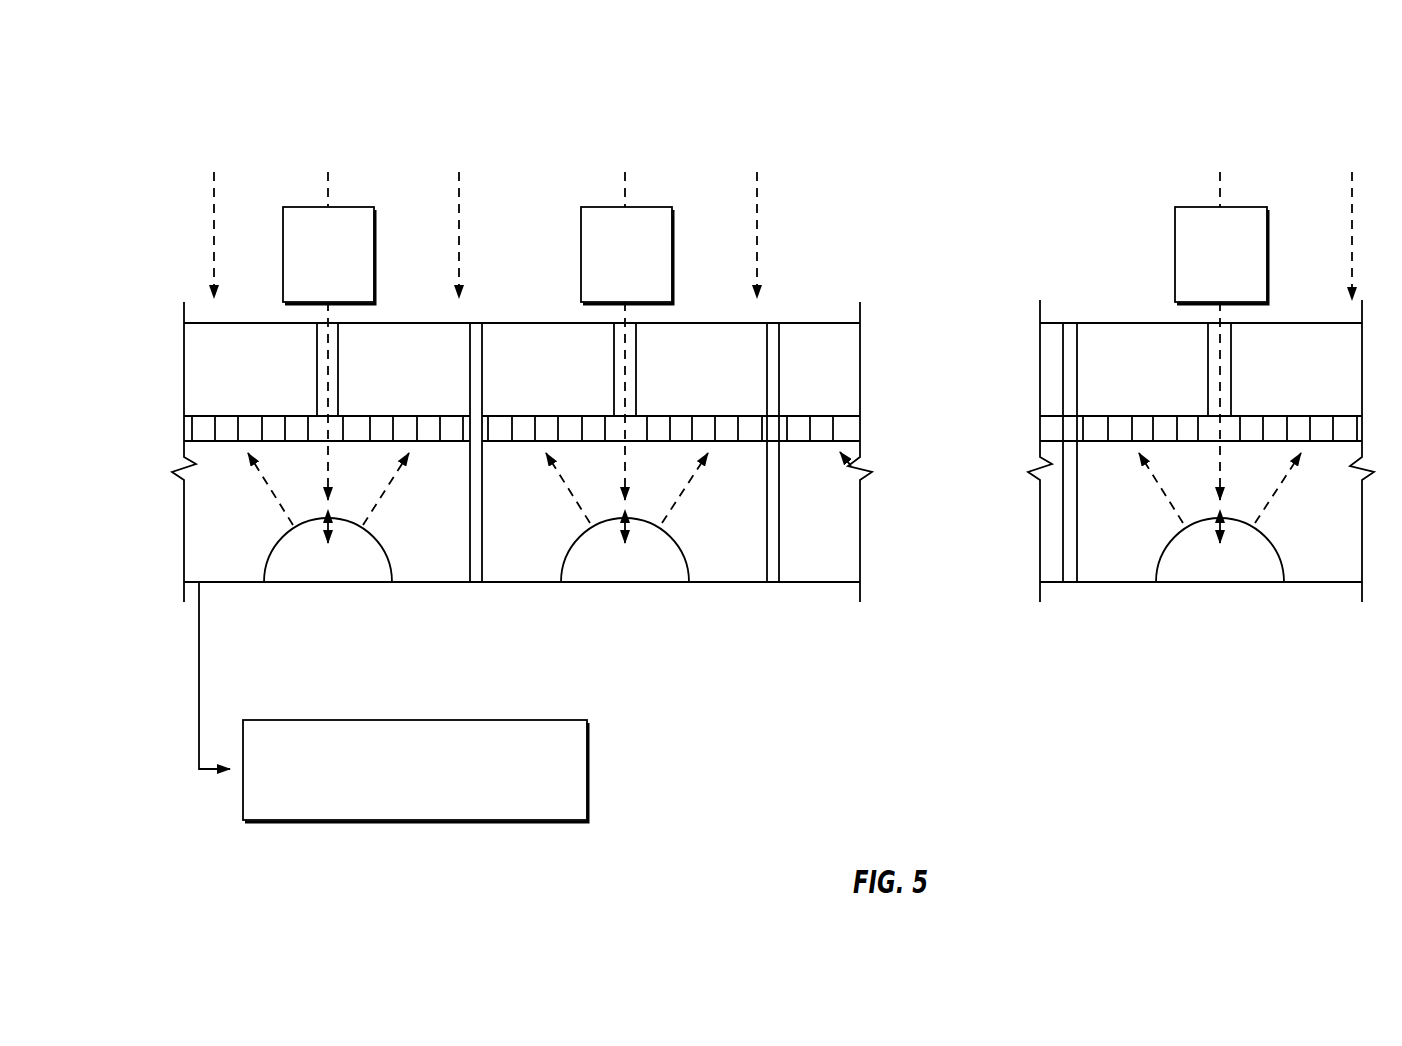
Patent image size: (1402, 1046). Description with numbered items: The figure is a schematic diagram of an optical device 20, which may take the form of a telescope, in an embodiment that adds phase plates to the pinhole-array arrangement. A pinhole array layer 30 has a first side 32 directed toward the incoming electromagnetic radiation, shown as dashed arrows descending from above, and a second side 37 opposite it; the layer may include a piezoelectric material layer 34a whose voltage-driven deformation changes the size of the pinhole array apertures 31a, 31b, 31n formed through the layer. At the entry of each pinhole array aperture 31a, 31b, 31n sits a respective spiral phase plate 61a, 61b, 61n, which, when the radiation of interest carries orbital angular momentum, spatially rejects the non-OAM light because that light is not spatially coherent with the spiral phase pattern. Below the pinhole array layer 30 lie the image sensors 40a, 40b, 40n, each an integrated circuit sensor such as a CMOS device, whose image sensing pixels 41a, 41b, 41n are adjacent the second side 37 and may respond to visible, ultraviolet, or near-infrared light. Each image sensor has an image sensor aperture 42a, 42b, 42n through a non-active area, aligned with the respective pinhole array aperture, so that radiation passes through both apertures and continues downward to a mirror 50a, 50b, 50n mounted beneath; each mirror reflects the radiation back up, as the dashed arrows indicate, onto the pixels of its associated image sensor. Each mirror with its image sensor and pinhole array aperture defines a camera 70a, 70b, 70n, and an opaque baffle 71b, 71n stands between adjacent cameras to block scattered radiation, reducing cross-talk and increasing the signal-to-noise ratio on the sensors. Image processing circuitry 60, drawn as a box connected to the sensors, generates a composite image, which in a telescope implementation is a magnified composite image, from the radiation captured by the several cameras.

The optical device 20 is at (122, 155).
The pinhole array layer 30 is at (207, 415).
The pinhole array aperture 31a is at (332, 330).
The pinhole array aperture 31b is at (630, 330).
The pinhole array aperture 31n is at (1225, 330).
The first side 32 is at (808, 323).
The piezoelectric material layer 34a is at (272, 343).
The second side 37 is at (220, 415).
The image sensor 40a is at (172, 432).
The image sensor 40b is at (872, 424).
The image sensor 40n is at (1373, 424).
The image sensing pixels 41a is at (230, 433).
The image sensing pixels 41b is at (750, 433).
The image sensing pixels 41n is at (1343, 433).
The image sensor aperture 42a is at (333, 425).
The image sensor aperture 42b is at (632, 425).
The image sensor aperture 42n is at (1227, 425).
The mirror 50a is at (370, 570).
The mirror 50b is at (667, 570).
The mirror 50n is at (1262, 570).
The image processing circuitry 60 is at (587, 780).
The phase plate 61a is at (343, 207).
The phase plate 61b is at (643, 207).
The phase plate 61n is at (1242, 207).
The camera 70a is at (248, 510).
The camera 70b is at (545, 510).
The camera 70n is at (1138, 510).
The opaque baffle 71b is at (770, 590).
The opaque baffle 71n is at (1070, 572).